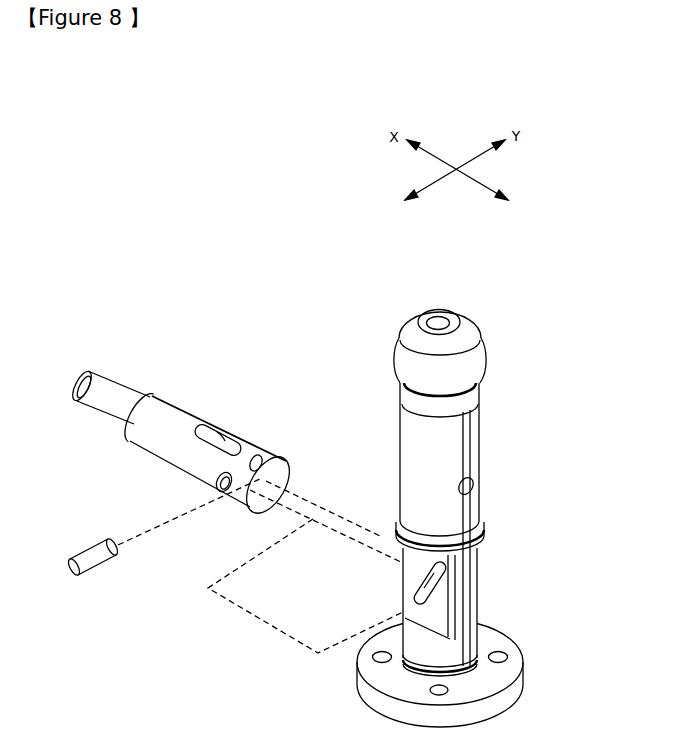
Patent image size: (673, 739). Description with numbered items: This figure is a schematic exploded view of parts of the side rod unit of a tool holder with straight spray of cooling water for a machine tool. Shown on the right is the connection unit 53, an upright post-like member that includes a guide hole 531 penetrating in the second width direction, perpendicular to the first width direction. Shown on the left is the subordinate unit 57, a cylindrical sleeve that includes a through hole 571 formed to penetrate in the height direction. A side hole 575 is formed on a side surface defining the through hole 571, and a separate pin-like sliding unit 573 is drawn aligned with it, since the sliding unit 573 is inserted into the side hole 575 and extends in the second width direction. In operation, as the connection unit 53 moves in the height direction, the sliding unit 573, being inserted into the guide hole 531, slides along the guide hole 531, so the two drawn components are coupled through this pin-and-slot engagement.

The connection unit 53 is at (440, 455).
The guide hole 531 is at (455, 585).
The subordinate unit 57 is at (122, 378).
The through hole 571 is at (212, 421).
The sliding unit 573 is at (93, 545).
The side hole 575 is at (213, 477).